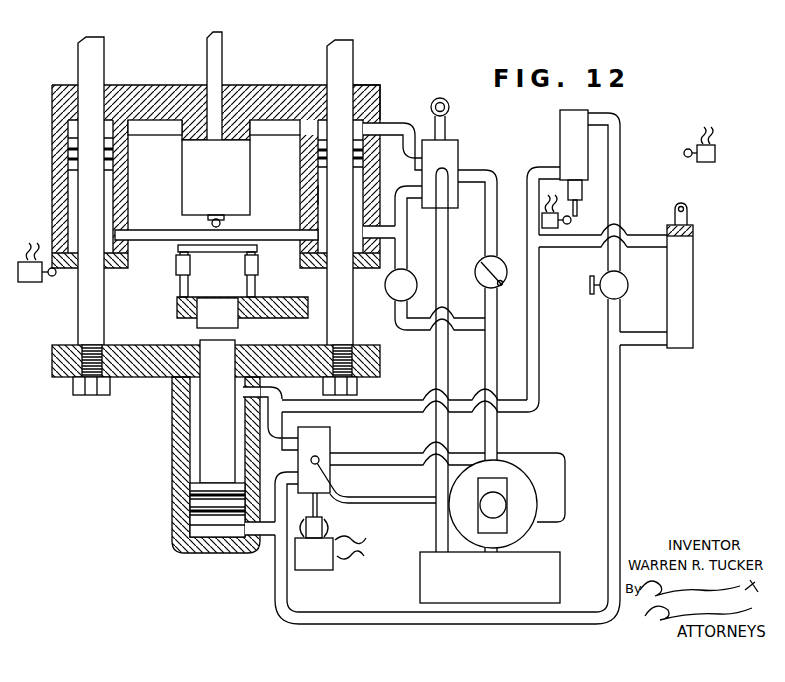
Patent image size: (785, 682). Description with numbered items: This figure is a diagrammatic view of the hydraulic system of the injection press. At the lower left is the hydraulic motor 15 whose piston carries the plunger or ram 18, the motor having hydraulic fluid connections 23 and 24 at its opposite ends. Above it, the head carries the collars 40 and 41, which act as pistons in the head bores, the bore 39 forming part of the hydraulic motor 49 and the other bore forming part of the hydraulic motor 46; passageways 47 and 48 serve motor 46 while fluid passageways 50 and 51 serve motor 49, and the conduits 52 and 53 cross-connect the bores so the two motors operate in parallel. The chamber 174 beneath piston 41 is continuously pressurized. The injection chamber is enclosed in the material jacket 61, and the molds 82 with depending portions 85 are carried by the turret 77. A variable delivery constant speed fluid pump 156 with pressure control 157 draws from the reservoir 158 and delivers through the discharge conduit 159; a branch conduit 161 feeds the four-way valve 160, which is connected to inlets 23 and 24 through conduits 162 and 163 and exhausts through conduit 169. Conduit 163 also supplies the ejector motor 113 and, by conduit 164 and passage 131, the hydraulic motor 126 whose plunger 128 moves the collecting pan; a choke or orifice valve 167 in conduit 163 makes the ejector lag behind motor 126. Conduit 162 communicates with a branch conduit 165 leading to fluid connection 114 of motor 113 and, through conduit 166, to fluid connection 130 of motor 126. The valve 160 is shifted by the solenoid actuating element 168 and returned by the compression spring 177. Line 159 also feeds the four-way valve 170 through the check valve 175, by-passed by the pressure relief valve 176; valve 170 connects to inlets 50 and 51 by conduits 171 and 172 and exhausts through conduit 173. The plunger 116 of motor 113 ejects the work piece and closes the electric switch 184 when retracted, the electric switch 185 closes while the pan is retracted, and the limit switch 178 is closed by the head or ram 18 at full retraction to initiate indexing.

The hydraulic motor 15 is at (174, 440).
The plunger or ram 18 is at (226, 430).
The hydraulic fluid connection 23 is at (268, 545).
The hydraulic fluid connection 24 is at (277, 394).
The bore 39 is at (372, 97).
The collar 40 is at (66, 155).
The collar 41 is at (322, 157).
The hydraulic motor 46 is at (212, 172).
The passageway 47 is at (120, 131).
The passageway 48 is at (118, 235).
The hydraulic motor 49 is at (304, 172).
The fluid passageway 50 is at (372, 128).
The fluid passageway 51 is at (374, 232).
The conduit 52 is at (266, 240).
The conduit 53 is at (258, 135).
The material jacket 61 is at (182, 177).
The turret 77 is at (177, 308).
The mold 82 is at (195, 278).
The depending portion 85 is at (198, 322).
The double acting hydraulic motor 113 is at (560, 133).
The fluid connection 114 is at (546, 169).
The plunger 116 is at (579, 190).
The hydraulic motor 126 is at (694, 254).
The plunger 128 is at (686, 213).
The fluid connection 130 is at (653, 236).
The fluid connection 131 is at (662, 342).
The variable delivery constant speed fluid pump 156 is at (510, 470).
The pressure control 157 is at (563, 501).
The reservoir 158 is at (560, 570).
The discharge conduit 159 is at (485, 368).
The 4-way valve 160 is at (332, 436).
The branch conduit 161 is at (413, 453).
The conduit 162 is at (289, 438).
The conduit 163 is at (384, 612).
The conduit 164 is at (622, 338).
The branch conduit 165 is at (411, 400).
The conduit 166 is at (590, 240).
The choke or orifice valve 167 is at (628, 282).
The solenoid actuating element 168 is at (333, 540).
The exhaust conduit 169 is at (337, 478).
The 4-way valve 170 is at (458, 146).
The conduit 171 is at (414, 160).
The conduit 172 is at (414, 190).
The exhaust conduit 173 is at (448, 229).
The chamber 174 is at (313, 192).
The check valve 175 is at (498, 261).
The pressure relief valve 176 is at (392, 300).
The compression spring 177 is at (310, 515).
The limit switch 178 is at (37, 273).
The electric switch 184 is at (552, 230).
The electric switch 185 is at (716, 155).